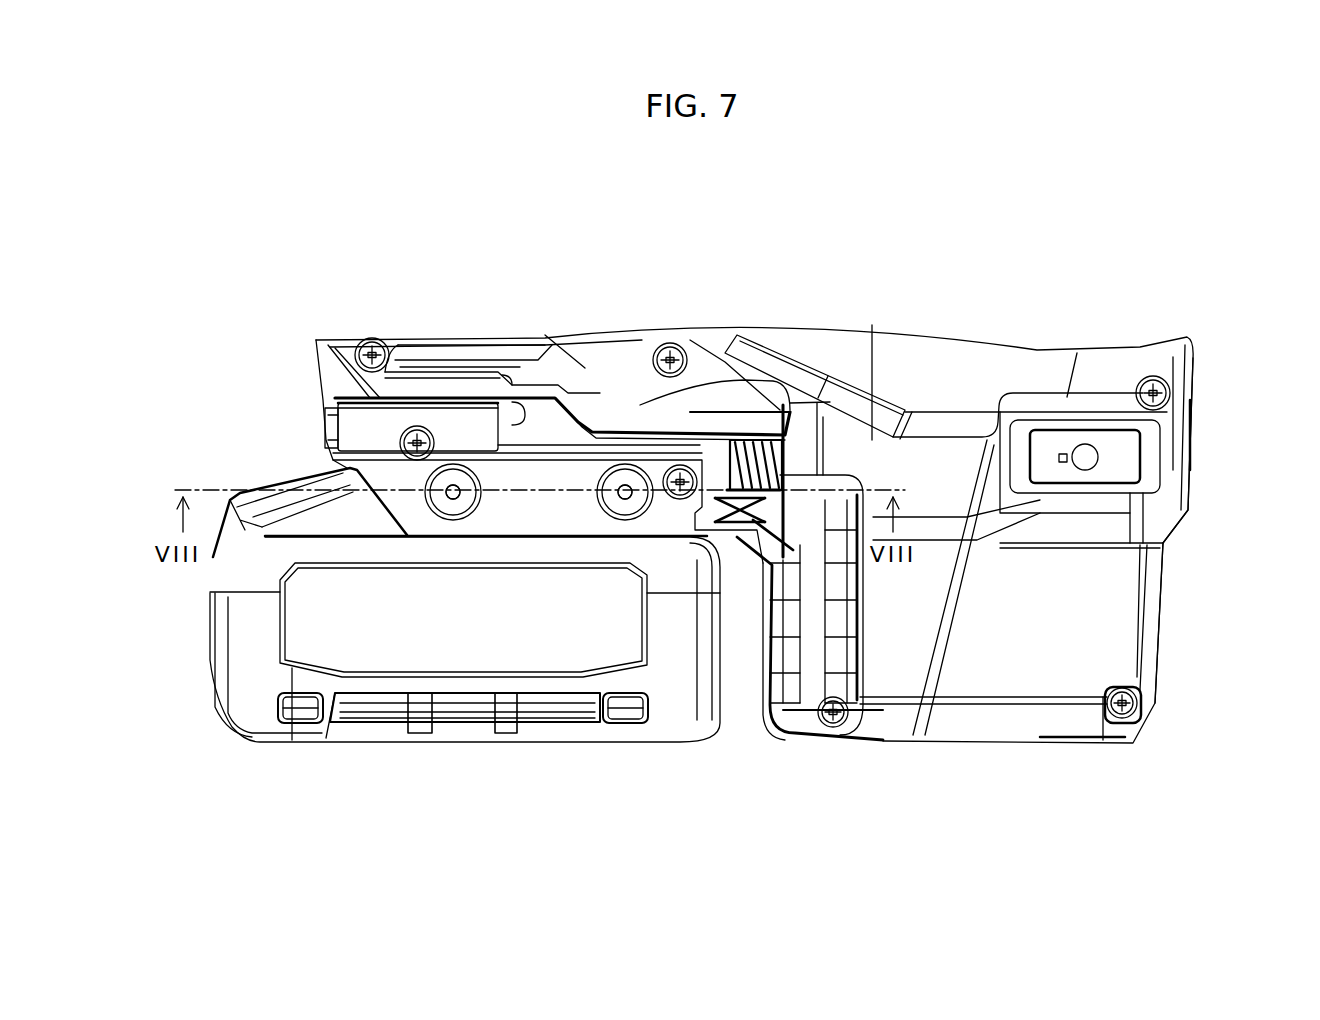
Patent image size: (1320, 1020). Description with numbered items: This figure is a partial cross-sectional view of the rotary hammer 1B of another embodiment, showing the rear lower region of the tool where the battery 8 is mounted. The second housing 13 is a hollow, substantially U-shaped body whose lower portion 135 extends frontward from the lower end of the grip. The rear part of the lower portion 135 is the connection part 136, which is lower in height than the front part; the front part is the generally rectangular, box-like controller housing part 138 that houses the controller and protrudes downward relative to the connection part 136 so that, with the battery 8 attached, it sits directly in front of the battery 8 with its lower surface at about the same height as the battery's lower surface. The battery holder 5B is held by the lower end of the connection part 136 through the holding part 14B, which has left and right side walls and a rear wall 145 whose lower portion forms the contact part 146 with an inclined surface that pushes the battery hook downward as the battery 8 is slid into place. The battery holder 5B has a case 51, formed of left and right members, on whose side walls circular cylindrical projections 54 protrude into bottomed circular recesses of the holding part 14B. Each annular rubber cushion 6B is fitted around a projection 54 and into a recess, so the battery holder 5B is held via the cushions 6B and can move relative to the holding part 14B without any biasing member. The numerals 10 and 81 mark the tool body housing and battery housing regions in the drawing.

The rotary hammer 1B is at (1048, 212).
The housing 10 is at (1117, 305).
The second housing 13 is at (1195, 720).
The lower portion 135 is at (1183, 546).
The controller housing part 138 is at (1120, 600).
The holding part 14B is at (298, 397).
The connection part 136 is at (456, 353).
The battery holder 5B is at (598, 410).
The case 51 is at (528, 446).
The rear wall 145 is at (318, 428).
The contact part 146 is at (330, 463).
The cushion 6B is at (453, 503).
The projection 54 is at (456, 506).
The battery 8 is at (197, 630).
The battery pack housing 81 is at (253, 700).